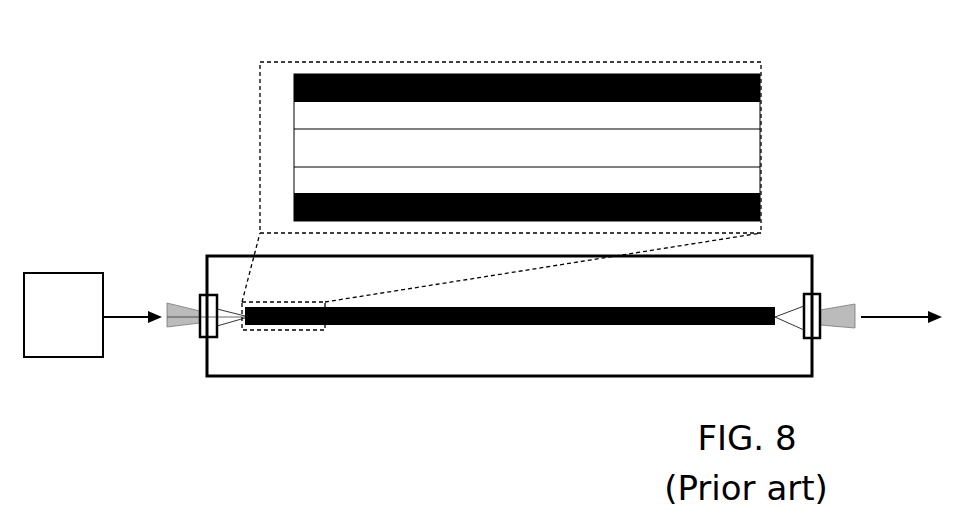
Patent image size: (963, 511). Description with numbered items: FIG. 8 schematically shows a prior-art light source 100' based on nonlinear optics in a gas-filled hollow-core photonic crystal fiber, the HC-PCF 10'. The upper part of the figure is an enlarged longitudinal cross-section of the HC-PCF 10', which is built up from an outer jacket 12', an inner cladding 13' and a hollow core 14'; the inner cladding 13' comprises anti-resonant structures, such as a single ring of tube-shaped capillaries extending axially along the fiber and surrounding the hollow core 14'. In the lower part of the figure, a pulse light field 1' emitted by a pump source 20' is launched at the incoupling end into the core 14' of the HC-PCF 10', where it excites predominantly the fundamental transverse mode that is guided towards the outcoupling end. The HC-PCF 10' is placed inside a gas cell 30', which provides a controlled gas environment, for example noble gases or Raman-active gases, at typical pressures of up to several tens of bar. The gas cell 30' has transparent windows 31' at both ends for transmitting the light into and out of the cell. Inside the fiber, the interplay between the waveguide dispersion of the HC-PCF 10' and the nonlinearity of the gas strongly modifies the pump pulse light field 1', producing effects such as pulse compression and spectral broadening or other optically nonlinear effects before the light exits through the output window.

The light source 100' is at (171, 183).
The HC-PCF 10' is at (560, 188).
The outer jacket 12' is at (514, 122).
The inner cladding 13' is at (487, 120).
The hollow core 14' is at (567, 158).
The pump source 20' is at (93, 315).
The pulse light field 1' is at (535, 355).
The gas cell 30' is at (509, 333).
The transparent windows 31' is at (467, 296).